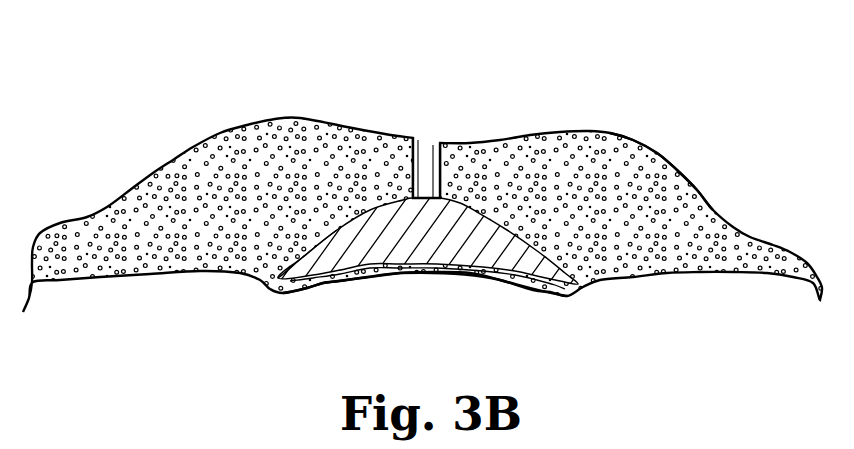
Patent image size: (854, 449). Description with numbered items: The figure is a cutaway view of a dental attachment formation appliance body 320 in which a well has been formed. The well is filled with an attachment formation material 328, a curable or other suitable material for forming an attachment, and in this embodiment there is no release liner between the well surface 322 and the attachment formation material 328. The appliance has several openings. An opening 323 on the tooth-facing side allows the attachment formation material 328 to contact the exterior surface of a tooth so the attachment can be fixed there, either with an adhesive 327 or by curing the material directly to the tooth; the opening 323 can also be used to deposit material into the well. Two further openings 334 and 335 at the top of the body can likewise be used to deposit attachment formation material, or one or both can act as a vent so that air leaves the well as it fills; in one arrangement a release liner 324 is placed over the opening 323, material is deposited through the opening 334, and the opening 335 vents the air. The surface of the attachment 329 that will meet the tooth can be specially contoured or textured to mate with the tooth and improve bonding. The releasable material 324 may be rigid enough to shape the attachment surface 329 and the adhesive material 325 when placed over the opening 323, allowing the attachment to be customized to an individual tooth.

The dental attachment formation appliance body 320 is at (250, 145).
The well surface 322 is at (473, 205).
The opening 323 is at (276, 305).
The release liner 324 is at (488, 280).
The adhesive material 325 is at (315, 283).
The adhesive 327 is at (367, 278).
The attachment formation material 328 is at (537, 222).
The surface of the attachment 329 is at (548, 268).
The opening 334 is at (417, 137).
The opening 335 is at (443, 138).